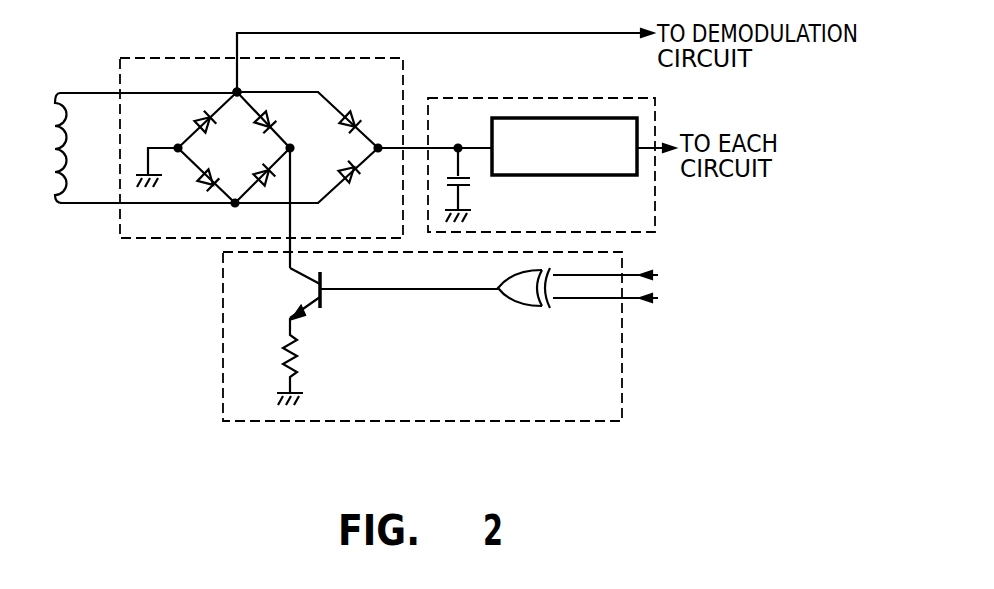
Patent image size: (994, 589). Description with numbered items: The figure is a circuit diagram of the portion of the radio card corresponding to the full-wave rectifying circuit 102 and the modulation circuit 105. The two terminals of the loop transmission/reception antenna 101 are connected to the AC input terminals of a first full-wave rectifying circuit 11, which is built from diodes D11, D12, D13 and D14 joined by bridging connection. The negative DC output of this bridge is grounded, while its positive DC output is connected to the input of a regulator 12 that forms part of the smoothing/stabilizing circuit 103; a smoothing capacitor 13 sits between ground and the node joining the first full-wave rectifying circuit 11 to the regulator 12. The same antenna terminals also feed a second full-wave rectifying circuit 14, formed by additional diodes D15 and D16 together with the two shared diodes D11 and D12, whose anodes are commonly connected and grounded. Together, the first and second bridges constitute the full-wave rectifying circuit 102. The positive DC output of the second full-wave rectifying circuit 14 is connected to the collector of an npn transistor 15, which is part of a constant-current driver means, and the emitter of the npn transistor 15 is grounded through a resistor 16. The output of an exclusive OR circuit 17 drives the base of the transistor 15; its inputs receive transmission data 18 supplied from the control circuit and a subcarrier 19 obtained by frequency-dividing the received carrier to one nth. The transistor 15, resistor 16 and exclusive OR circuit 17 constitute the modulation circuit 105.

The loop transmission/reception antenna 101 is at (55, 108).
The full-wave rectifying circuit 102 is at (166, 40).
The smoothing/stabilizing circuit 103 is at (583, 98).
The modulation circuit 105 is at (469, 423).
The second full-wave rectifying circuit 14 is at (222, 100).
The first full-wave rectifying circuit 11 is at (270, 101).
The diode D11 is at (190, 124).
The diode D12 is at (200, 182).
The diode D13 is at (349, 112).
The diode D14 is at (355, 186).
The additional diode D15 is at (275, 126).
The additional diode D16 is at (258, 183).
The regulator 12 is at (581, 177).
The smoothing capacitor 13 is at (474, 183).
The npn transistor 15 is at (325, 300).
The resistor 16 is at (283, 345).
The exclusive OR circuit 17 is at (517, 307).
The transmission data 18 is at (635, 274).
The subcarrier 19 is at (640, 302).